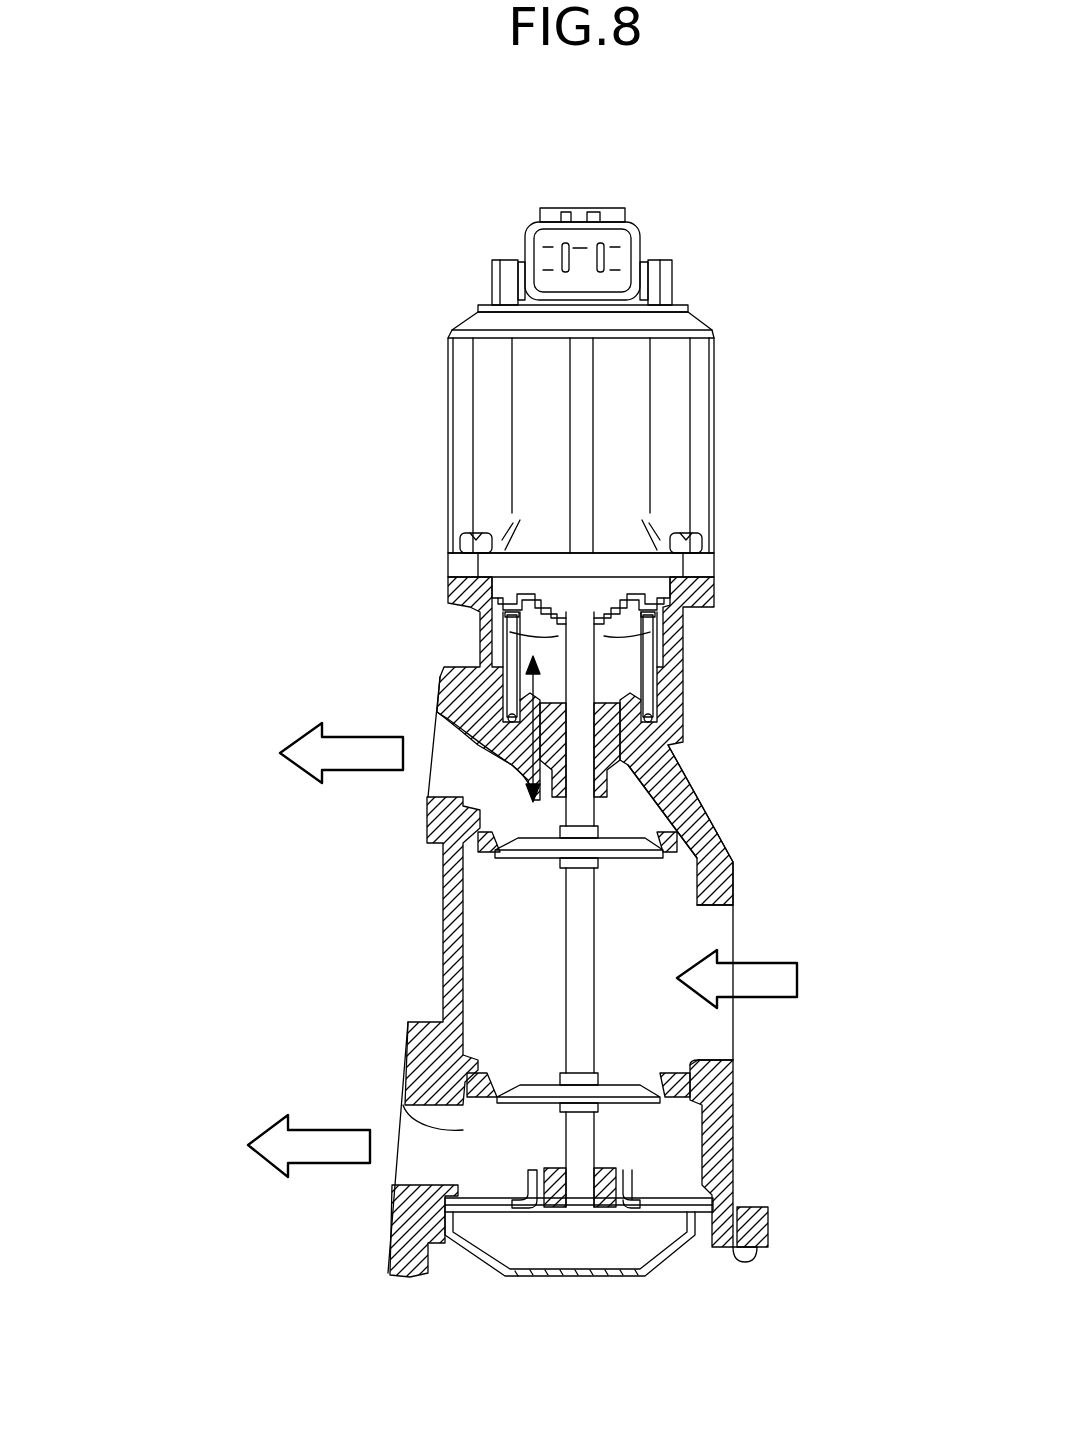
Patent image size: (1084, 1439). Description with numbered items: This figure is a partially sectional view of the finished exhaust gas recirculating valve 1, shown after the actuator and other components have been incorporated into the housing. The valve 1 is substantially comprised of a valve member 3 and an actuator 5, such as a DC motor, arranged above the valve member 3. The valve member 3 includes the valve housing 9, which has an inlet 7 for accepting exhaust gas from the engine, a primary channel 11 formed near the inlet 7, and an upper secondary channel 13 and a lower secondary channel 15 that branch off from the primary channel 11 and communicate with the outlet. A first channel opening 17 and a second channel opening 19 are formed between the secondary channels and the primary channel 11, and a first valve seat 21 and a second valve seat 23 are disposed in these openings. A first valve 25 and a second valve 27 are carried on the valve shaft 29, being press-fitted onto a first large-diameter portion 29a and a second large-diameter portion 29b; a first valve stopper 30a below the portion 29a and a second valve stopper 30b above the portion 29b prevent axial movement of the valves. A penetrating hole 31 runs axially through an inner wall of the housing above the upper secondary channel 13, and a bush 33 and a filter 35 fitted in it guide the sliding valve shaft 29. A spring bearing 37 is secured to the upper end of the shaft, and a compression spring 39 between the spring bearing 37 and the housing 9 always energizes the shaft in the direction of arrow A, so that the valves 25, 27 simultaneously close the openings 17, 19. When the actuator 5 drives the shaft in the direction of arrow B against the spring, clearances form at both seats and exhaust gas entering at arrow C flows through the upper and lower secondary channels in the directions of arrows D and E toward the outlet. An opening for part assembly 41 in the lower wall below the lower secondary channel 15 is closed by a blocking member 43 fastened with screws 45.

The exhaust gas recirculating valve 1 is at (497, 182).
The valve member 3 is at (192, 683).
The actuator 5 is at (714, 316).
The inlet 7 is at (735, 918).
The valve housing 9 is at (698, 650).
The primary channel 11 is at (645, 1040).
The upper secondary channel 13 is at (450, 740).
The lower secondary channel 15 is at (450, 1158).
The first channel opening 17 is at (470, 878).
The second channel opening 19 is at (400, 1107).
The first valve seat 21 is at (707, 835).
The second valve seat 23 is at (692, 1080).
The first valve 25 is at (613, 860).
The second valve 27 is at (650, 1115).
The valve shaft 29 is at (657, 688).
The first large-diameter portion 29a is at (587, 822).
The second large-diameter portion 29b is at (568, 1127).
The first valve stopper 30a is at (553, 865).
The second valve stopper 30b is at (557, 1073).
The penetrating hole 31 is at (665, 760).
The bush 33 is at (635, 740).
The filter 35 is at (690, 812).
The spring bearing 37 is at (665, 622).
The compression spring 39 is at (442, 615).
The opening for part assembly 41 is at (462, 1258).
The blocking member 43 is at (607, 1273).
The screws 45 is at (738, 1258).
The arrow A direction A is at (528, 658).
The arrow B direction B is at (528, 797).
The exhaust gas inflow C is at (785, 980).
The arrow D direction D is at (300, 742).
The arrow E direction E is at (272, 1133).